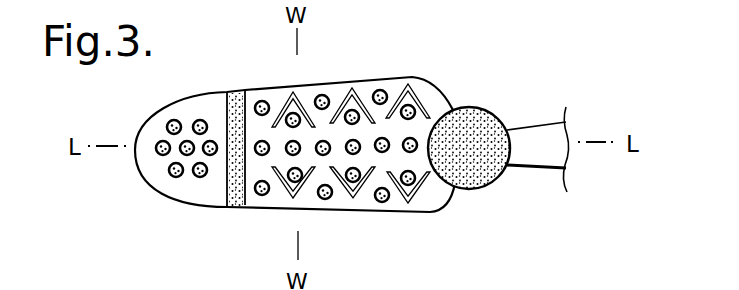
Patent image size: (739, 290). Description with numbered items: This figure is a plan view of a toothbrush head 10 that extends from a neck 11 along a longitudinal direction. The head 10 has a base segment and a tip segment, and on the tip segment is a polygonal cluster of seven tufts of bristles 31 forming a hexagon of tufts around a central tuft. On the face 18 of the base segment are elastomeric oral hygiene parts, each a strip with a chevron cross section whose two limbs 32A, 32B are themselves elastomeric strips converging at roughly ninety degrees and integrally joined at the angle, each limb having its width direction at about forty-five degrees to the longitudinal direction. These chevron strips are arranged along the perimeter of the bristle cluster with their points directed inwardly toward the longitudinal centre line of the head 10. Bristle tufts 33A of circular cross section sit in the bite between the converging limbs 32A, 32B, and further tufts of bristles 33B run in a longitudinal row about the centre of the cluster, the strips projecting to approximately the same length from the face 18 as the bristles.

The toothbrush head 10 is at (199, 214).
The neck 11 is at (530, 130).
The face 18 is at (340, 204).
The tufts of bristles 31 is at (168, 128).
The limb of chevron 32A is at (280, 100).
The limb of chevron 32B is at (308, 95).
The bristle tufts 33A is at (423, 82).
The tufts of bristles 33B is at (388, 152).